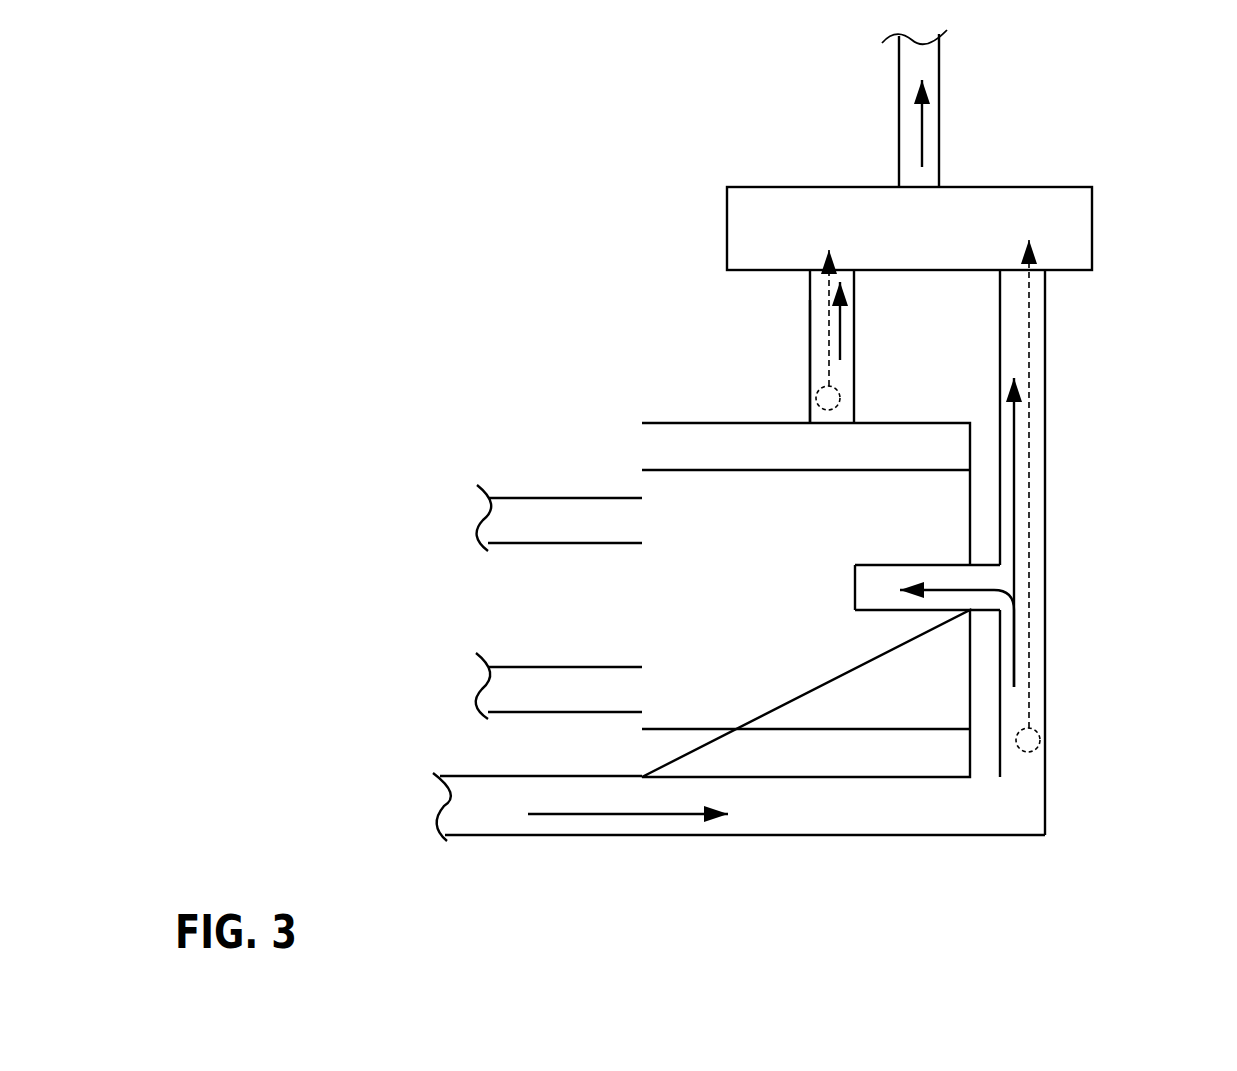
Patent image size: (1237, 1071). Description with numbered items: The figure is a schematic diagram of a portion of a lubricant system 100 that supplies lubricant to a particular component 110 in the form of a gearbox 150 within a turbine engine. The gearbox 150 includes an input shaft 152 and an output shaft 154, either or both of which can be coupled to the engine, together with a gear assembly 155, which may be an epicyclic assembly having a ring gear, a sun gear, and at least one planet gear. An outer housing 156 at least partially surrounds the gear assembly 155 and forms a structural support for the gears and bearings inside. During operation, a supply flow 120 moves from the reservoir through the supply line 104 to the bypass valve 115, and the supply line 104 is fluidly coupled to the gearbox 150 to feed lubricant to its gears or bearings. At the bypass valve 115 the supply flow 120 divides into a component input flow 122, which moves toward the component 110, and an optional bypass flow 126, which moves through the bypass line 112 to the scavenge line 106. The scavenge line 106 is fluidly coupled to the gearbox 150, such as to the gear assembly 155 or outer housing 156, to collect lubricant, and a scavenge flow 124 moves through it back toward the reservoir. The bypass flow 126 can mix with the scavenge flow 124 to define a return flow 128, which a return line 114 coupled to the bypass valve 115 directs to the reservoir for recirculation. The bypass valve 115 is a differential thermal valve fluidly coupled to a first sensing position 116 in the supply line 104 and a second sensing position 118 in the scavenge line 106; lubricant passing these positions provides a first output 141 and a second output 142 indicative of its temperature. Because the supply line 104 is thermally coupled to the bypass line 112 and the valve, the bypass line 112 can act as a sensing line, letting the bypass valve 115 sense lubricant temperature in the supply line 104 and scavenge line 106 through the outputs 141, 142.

The lubricant system 100 is at (1183, 128).
The supply line 104 is at (518, 835).
The scavenge line 106 is at (810, 372).
The component 110 is at (528, 355).
The bypass line 112 is at (1045, 345).
The return line 114 is at (939, 115).
The bypass valve 115 is at (924, 242).
The first sensing position 116 is at (1037, 748).
The second sensing position 118 is at (838, 393).
The supply flow 120 is at (660, 816).
The component input flow 122 is at (967, 590).
The scavenge flow 124 is at (840, 322).
The bypass flow 126 is at (1015, 425).
The return flow 128 is at (920, 132).
The first output 141 is at (1030, 323).
The second output 142 is at (828, 340).
The gearbox 150 is at (657, 418).
The input shaft 152 is at (512, 682).
The output shaft 154 is at (517, 522).
The gear assembly 155 is at (776, 596).
The outer housing 156 is at (658, 452).